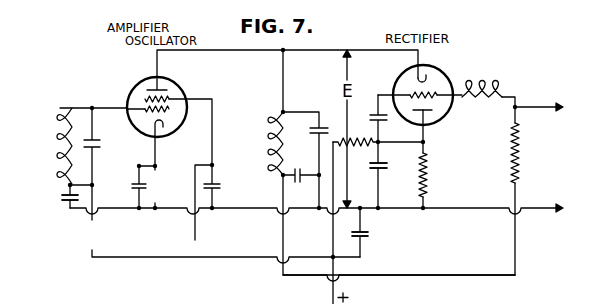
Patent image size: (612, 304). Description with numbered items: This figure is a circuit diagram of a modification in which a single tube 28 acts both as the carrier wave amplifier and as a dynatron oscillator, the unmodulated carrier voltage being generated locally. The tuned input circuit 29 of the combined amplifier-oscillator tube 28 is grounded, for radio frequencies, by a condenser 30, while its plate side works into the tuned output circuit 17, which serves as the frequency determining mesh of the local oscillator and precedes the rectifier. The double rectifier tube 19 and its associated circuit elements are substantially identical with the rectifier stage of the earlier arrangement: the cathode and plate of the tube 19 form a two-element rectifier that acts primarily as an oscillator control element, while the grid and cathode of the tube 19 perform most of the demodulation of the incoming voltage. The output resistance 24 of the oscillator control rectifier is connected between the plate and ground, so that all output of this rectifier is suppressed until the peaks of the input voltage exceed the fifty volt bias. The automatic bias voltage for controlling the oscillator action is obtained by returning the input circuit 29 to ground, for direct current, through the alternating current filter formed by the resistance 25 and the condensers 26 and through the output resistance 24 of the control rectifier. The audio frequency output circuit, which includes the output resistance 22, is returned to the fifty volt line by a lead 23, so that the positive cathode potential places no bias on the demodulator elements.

The tuned output circuit 17 is at (291, 143).
The double rectifier tube 19 is at (438, 66).
The output resistance 22 is at (520, 147).
The lead 23 is at (440, 275).
The output resistance of the oscillator control rectifier 24 is at (429, 180).
The resistance 25 is at (355, 152).
The condensers 26 is at (384, 164).
The combined amplifier-oscillator tube 28 is at (131, 92).
The tuned input circuit 29 is at (80, 117).
The condenser 30 is at (60, 196).